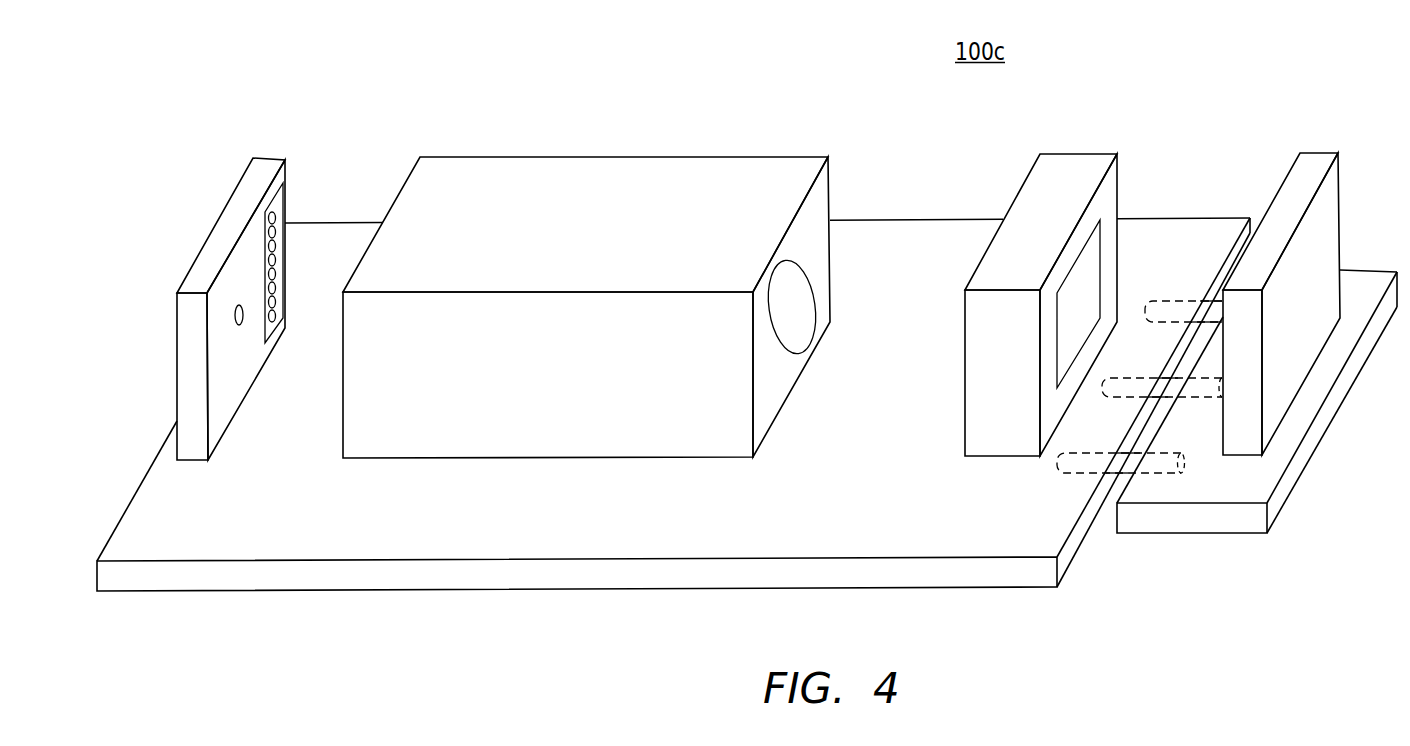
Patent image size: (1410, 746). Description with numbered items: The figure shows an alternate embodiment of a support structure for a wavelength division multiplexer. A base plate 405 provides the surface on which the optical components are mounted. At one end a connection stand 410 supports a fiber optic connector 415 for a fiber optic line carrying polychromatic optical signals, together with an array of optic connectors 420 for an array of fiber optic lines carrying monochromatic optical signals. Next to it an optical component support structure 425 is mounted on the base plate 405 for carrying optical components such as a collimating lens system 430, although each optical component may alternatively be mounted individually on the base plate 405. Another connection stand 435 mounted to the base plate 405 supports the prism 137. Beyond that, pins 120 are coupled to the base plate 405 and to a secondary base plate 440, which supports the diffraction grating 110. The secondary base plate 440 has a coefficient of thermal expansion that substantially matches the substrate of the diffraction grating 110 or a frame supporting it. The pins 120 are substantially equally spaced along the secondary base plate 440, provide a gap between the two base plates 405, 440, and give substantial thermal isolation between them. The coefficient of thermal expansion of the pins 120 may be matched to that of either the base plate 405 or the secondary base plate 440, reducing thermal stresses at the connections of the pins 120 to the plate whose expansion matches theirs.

The base plate 405 is at (935, 573).
The connection stand 410 is at (236, 188).
The fiber optic connector 415 is at (239, 305).
The array of optic connectors 420 is at (286, 192).
The optical component support structure 425 is at (659, 156).
The collimating lens system 430 is at (812, 267).
The connection stand 435 is at (1064, 156).
The prism 137 is at (1100, 246).
The diffraction grating 110 is at (1309, 154).
The pins 120 is at (1218, 323).
The secondary base plate 440 is at (1231, 528).